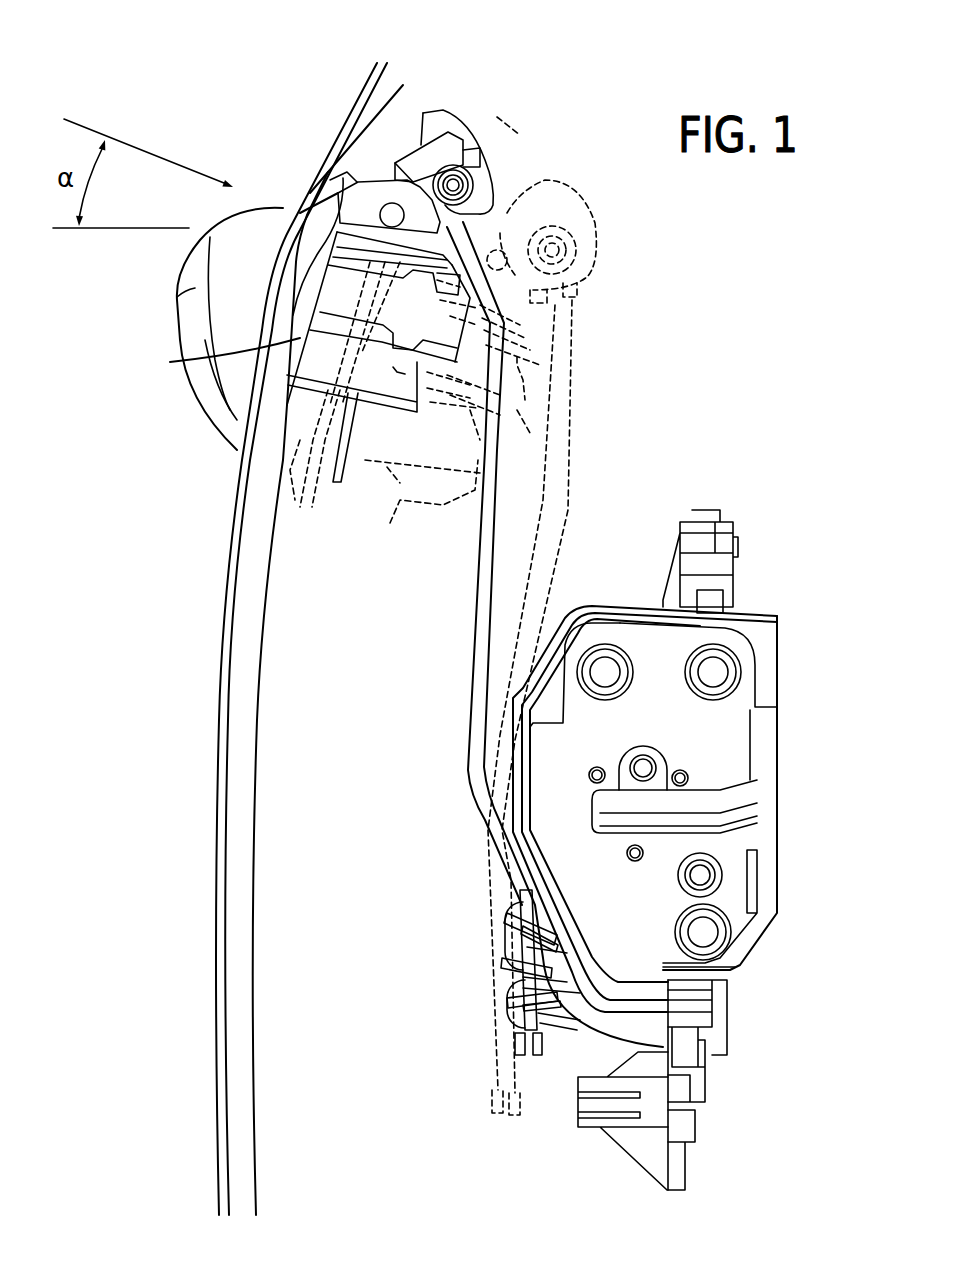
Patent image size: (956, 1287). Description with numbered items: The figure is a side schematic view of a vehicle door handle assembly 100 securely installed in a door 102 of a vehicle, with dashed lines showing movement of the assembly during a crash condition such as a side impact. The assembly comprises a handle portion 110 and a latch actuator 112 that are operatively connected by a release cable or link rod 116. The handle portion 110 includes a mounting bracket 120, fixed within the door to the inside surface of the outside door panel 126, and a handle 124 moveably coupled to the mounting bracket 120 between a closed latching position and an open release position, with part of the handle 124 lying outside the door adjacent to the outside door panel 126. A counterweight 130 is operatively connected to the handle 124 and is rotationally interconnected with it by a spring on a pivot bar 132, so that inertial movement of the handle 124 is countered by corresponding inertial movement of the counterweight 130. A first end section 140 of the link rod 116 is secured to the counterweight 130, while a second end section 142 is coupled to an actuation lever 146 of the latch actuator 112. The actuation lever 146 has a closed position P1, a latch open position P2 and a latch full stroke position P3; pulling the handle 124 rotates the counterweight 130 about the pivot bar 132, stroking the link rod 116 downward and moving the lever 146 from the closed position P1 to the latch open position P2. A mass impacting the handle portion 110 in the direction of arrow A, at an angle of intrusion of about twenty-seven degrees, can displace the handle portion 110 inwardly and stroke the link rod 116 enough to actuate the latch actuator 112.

The vehicle door handle assembly 100 is at (721, 320).
The door 102 is at (213, 640).
The handle portion 110 is at (328, 508).
The latch actuator 112 is at (806, 688).
The link rod 116 is at (480, 630).
The mounting bracket 120 is at (300, 338).
The handle 124 is at (189, 288).
The outside door panel 126 is at (243, 528).
The counterweight 130 is at (437, 130).
The pivot bar 132 is at (392, 204).
The first end section 140 is at (473, 252).
The second end section 142 is at (532, 950).
The actuation lever 146 is at (553, 938).
The closed position P1 is at (492, 906).
The latch open position P2 is at (487, 969).
The latch full stroke position P3 is at (493, 1014).
The arrow A is at (132, 147).